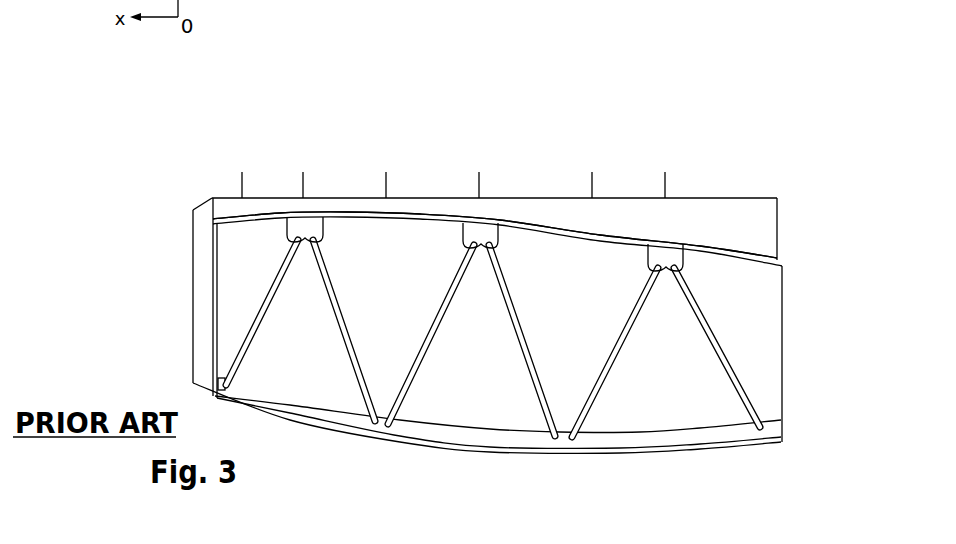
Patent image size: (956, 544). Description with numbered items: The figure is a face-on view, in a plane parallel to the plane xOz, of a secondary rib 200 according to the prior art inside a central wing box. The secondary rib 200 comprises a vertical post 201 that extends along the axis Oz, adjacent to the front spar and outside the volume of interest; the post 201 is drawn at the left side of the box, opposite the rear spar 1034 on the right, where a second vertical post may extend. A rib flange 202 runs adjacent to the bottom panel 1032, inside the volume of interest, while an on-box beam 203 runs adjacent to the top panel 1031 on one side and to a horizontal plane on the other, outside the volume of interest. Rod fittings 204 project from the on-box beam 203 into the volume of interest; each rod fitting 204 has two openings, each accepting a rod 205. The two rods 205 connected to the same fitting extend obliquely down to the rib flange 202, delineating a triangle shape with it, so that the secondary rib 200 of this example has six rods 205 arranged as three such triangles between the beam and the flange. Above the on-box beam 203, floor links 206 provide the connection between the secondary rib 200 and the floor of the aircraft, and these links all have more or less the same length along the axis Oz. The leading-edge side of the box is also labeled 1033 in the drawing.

The secondary rib 200 is at (259, 138).
The vertical post 201 is at (207, 289).
The rib flange 202 is at (437, 434).
The on-box beam 203 is at (428, 211).
The rod fitting 204 is at (311, 218).
The rod 205 is at (251, 343).
The floor link 206 is at (479, 183).
The top panel 1031 is at (541, 227).
The bottom panel 1032 is at (618, 455).
The leading edge side 1033 is at (207, 254).
The rear spar 1034 is at (783, 317).